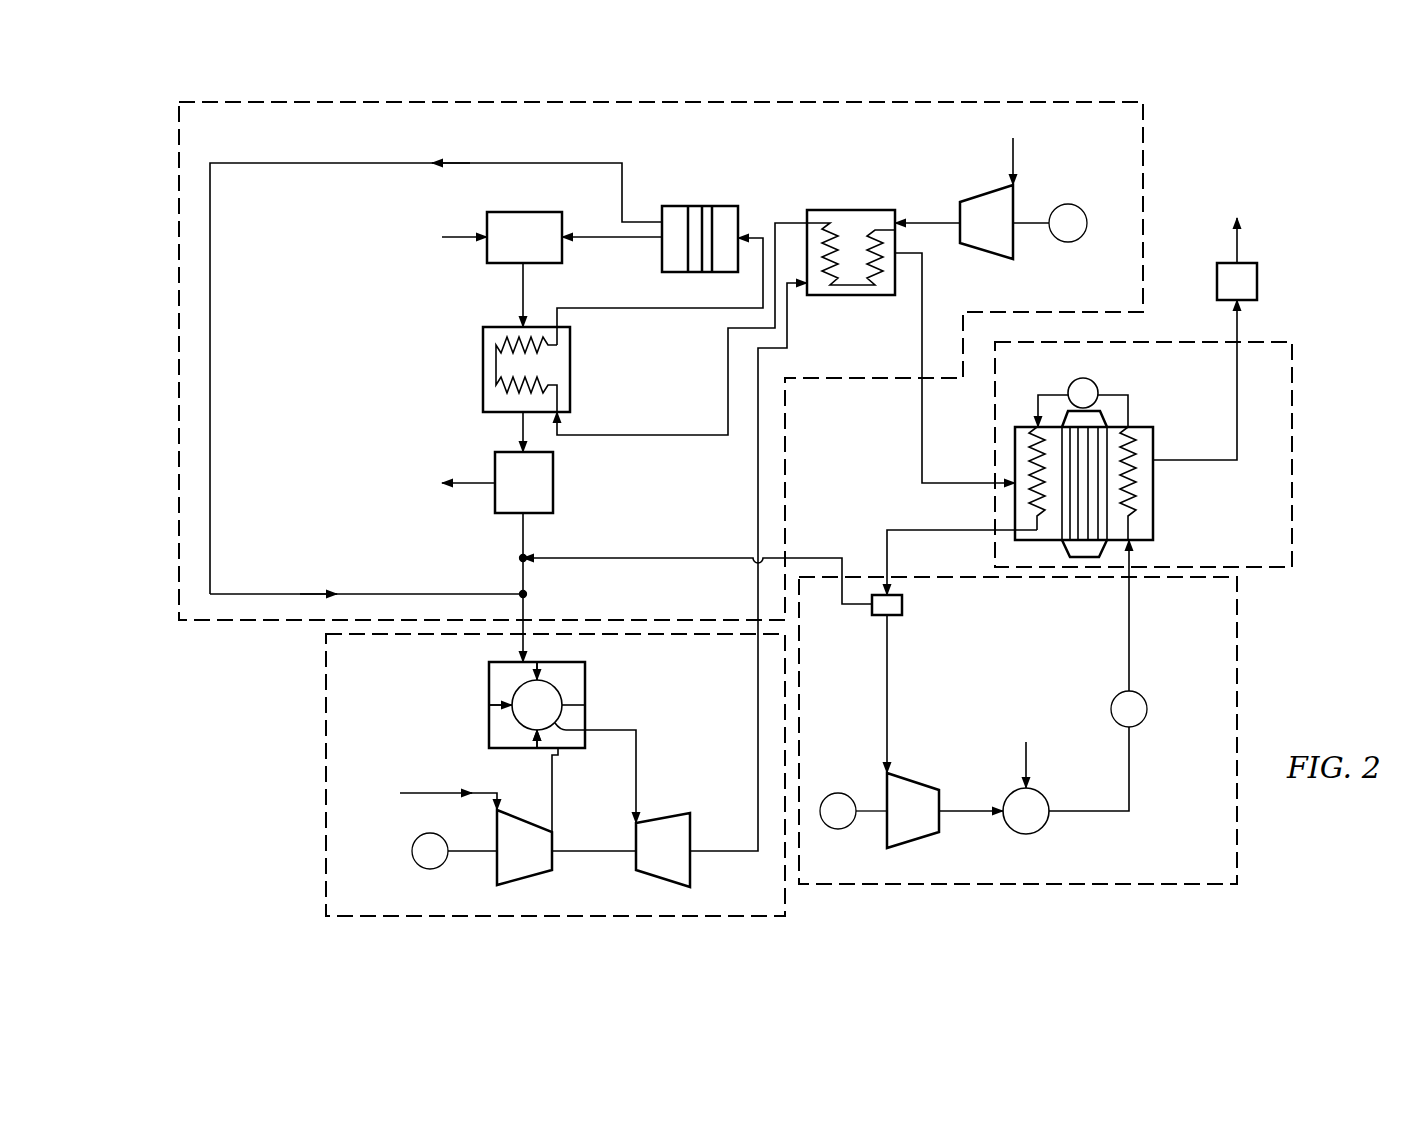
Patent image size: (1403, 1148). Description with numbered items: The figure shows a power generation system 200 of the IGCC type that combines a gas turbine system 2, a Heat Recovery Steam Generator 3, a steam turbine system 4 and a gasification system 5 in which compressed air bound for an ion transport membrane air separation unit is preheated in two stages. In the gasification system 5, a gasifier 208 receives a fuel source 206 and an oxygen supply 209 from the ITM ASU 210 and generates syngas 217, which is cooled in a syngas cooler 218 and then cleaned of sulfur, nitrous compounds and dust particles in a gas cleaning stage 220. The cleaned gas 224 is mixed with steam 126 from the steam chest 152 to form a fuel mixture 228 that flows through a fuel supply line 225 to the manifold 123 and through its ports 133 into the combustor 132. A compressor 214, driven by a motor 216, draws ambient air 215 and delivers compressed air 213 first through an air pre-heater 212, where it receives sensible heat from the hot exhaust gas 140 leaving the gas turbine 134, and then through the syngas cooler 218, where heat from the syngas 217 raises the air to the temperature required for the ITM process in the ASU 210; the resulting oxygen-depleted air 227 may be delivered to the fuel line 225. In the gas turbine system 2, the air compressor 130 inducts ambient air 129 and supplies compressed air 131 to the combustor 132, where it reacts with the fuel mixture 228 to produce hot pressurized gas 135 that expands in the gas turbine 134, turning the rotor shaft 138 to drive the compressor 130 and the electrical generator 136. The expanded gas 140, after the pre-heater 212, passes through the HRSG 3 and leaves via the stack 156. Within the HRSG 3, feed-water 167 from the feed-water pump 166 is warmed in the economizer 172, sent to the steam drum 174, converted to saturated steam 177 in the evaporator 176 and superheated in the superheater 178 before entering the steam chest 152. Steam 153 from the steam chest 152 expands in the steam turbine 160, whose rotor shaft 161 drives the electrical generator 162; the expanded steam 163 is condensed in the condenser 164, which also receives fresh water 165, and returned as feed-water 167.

The power generation system 200 is at (1304, 150).
The gas turbine system 2 is at (326, 697).
The Heat Recovery Steam Generator 3 is at (1292, 400).
The steam turbine system 4 is at (1237, 640).
The gasification system 5 is at (1143, 140).
The fuel manifold 123 is at (489, 672).
The steam 126 is at (650, 552).
The ambient air 129 is at (447, 784).
The air compressor 130 is at (497, 876).
The compressed air 131 is at (565, 792).
The combustor 132 is at (556, 686).
The ports 133 is at (565, 705).
The gas turbine 134 is at (690, 870).
The hot pressurized gas 135 is at (648, 768).
The electrical generator 136 is at (412, 845).
The rotor shaft 138 is at (585, 852).
The expanded gas 140 is at (910, 425).
The steam chest 152 is at (907, 601).
The steam 153 is at (898, 707).
The stack 156 is at (1257, 283).
The steam turbine 160 is at (912, 840).
The rotor shaft 161 is at (863, 822).
The electrical generator 162 is at (857, 797).
The expanded steam 163 is at (980, 799).
The condenser 164 is at (1040, 830).
The fresh water 165 is at (1028, 760).
The feed-water pump 166 is at (1117, 697).
The feed-water 167 is at (1143, 636).
The economizer 172 is at (1138, 475).
The steam drum 174 is at (1088, 380).
The evaporator 176 is at (1060, 525).
The saturated steam 177 is at (1052, 368).
The superheater 178 is at (1030, 465).
The fuel source 206 is at (434, 238).
The gasifier 208 is at (524, 212).
The oxygen supply 209 is at (600, 250).
The ITM ASU 210 is at (708, 206).
The air pre-heater 212 is at (845, 210).
The compressed air 213 is at (925, 204).
The compressor 214 is at (985, 257).
The ambient air 215 is at (1022, 163).
The motor 216 is at (1068, 242).
The syngas 217 is at (508, 313).
The syngas cooler 218 is at (483, 362).
The gas cleaning stage 220 is at (553, 470).
The cleaned gas 224 is at (508, 553).
The fuel supply line 225 is at (523, 580).
The oxygen-depleted air 227 is at (300, 585).
The fuel mixture 228 is at (541, 590).